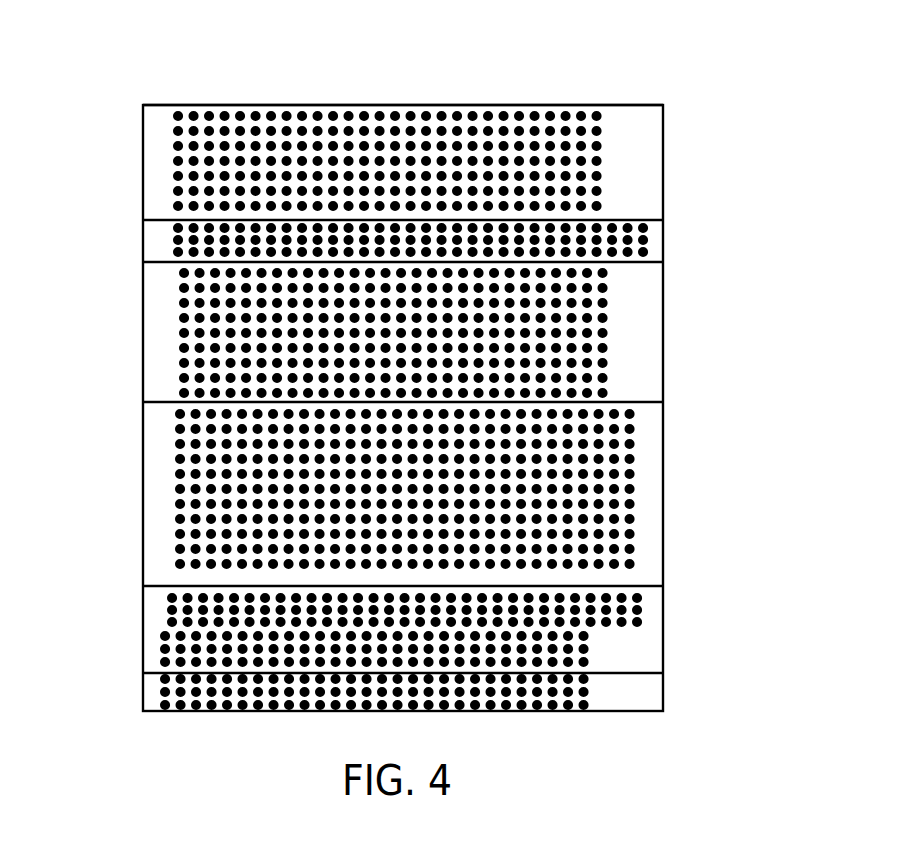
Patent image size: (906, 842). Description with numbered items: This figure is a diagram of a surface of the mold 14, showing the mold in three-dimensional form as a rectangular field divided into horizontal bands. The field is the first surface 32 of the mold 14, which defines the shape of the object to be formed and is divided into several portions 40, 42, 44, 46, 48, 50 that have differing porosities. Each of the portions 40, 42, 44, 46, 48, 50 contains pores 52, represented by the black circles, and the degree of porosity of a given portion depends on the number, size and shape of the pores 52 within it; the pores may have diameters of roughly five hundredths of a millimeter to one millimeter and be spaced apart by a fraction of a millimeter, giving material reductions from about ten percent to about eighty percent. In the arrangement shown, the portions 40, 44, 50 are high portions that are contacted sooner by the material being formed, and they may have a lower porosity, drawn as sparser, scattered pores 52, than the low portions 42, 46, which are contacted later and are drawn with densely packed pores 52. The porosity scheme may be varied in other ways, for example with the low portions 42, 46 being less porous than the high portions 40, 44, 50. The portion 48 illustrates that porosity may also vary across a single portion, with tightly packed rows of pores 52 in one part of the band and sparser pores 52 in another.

The mold 14 is at (640, 66).
The first surface 32 is at (232, 104).
The portion 40 is at (143, 172).
The portion 42 is at (143, 241).
The portion 44 is at (143, 330).
The portion 46 is at (143, 483).
The portion 48 is at (143, 627).
The portion 50 is at (143, 690).
The pores 52 is at (652, 172).